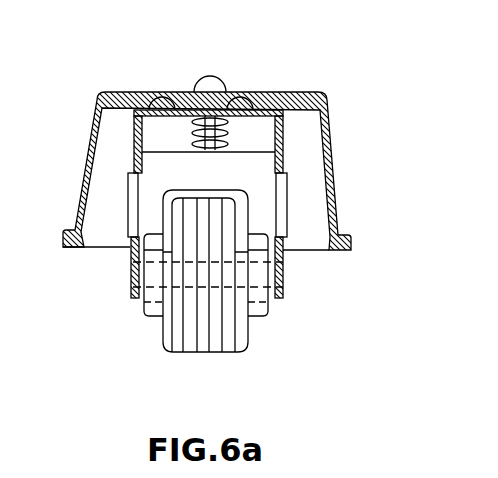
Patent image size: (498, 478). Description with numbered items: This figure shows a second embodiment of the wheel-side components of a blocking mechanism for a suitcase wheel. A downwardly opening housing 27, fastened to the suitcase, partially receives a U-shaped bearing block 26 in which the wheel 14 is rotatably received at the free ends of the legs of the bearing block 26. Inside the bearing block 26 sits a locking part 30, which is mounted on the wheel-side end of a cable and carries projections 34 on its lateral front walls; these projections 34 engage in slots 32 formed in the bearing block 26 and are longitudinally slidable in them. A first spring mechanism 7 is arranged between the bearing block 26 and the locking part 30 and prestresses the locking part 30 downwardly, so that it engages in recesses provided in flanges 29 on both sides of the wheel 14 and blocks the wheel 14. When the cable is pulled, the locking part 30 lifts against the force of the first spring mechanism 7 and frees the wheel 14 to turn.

The first spring mechanism 7 is at (228, 130).
The wheel 14 is at (216, 341).
The U-shaped bearing block 26 is at (135, 113).
The housing 27 is at (310, 92).
The flanges 29 is at (250, 310).
The locking part 30 is at (160, 178).
The slots 32 is at (288, 152).
The projections 34 is at (284, 203).